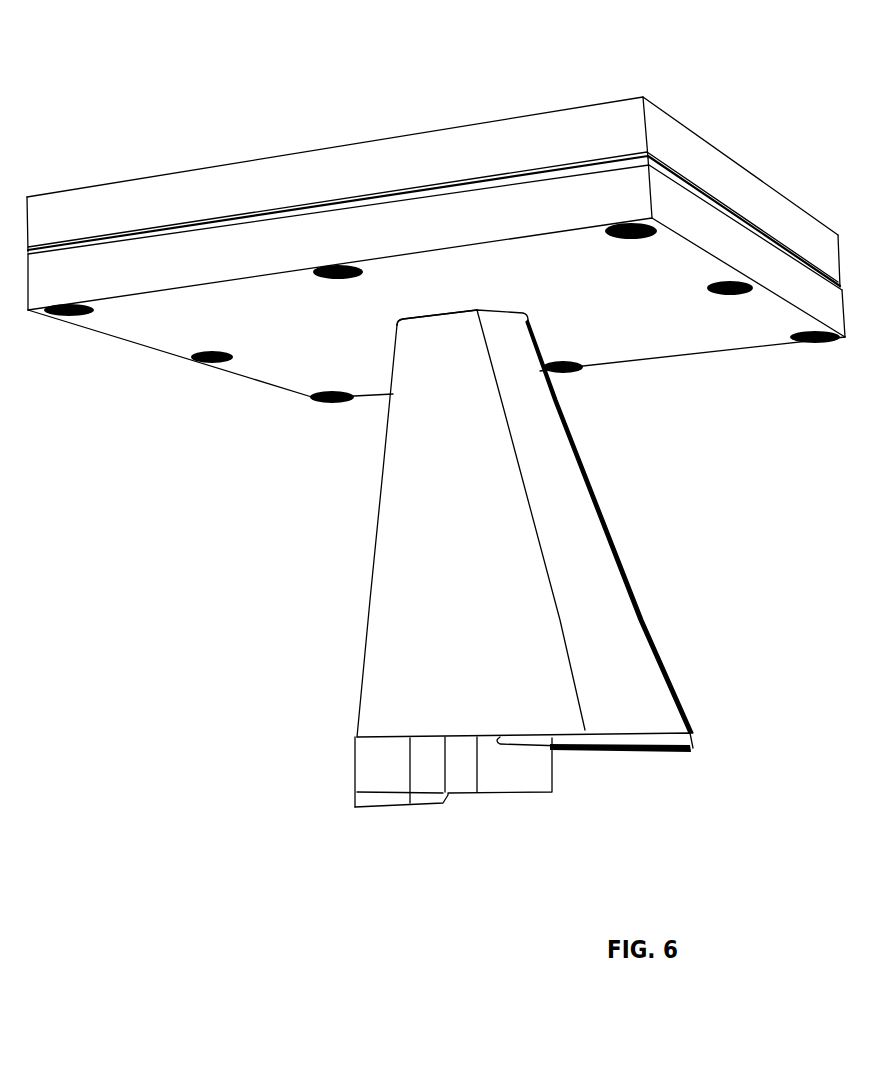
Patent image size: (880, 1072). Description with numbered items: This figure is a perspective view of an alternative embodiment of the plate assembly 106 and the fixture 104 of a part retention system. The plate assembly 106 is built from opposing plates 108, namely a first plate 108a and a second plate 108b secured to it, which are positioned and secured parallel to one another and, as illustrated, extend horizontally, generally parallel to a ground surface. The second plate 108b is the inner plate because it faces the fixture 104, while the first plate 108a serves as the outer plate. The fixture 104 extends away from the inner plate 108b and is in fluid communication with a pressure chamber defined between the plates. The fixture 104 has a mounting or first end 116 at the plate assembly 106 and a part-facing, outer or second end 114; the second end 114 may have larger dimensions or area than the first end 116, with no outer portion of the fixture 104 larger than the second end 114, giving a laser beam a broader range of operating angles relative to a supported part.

The fixture 104 is at (538, 599).
The plate assembly 106 is at (436, 231).
The plates 108 is at (436, 266).
The first plate 108a is at (227, 188).
The second plate 108b is at (283, 347).
The second end 114 is at (513, 833).
The first end 116 is at (420, 312).